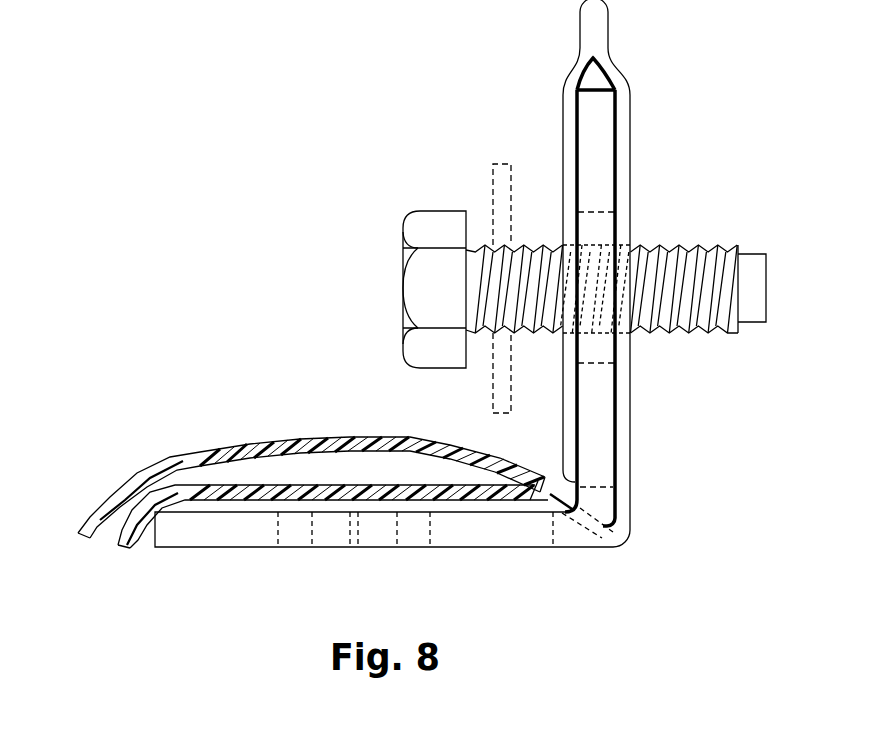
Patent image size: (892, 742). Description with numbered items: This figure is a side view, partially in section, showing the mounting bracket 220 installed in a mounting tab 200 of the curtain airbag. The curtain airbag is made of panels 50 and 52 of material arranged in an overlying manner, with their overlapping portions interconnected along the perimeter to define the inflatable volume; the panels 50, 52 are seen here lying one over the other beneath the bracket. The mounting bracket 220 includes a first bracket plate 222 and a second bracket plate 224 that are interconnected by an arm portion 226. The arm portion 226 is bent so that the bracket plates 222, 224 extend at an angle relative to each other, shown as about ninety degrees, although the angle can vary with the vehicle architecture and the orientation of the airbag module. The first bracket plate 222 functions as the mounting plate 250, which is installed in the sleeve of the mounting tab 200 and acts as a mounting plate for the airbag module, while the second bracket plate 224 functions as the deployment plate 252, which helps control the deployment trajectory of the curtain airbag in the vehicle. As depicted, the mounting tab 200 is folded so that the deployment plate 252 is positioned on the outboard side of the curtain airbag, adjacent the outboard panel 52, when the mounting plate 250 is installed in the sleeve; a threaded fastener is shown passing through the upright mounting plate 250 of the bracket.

The mounting tab 200 is at (623, 103).
The first bracket plate 222 is at (600, 185).
The mounting bracket 220 is at (593, 203).
The arm portion 226 is at (593, 506).
The second bracket plate 224 is at (267, 533).
The deployment plate 252 is at (442, 528).
The mounting plate 250 is at (597, 392).
The panel 50 is at (287, 447).
The panel 52 is at (325, 490).